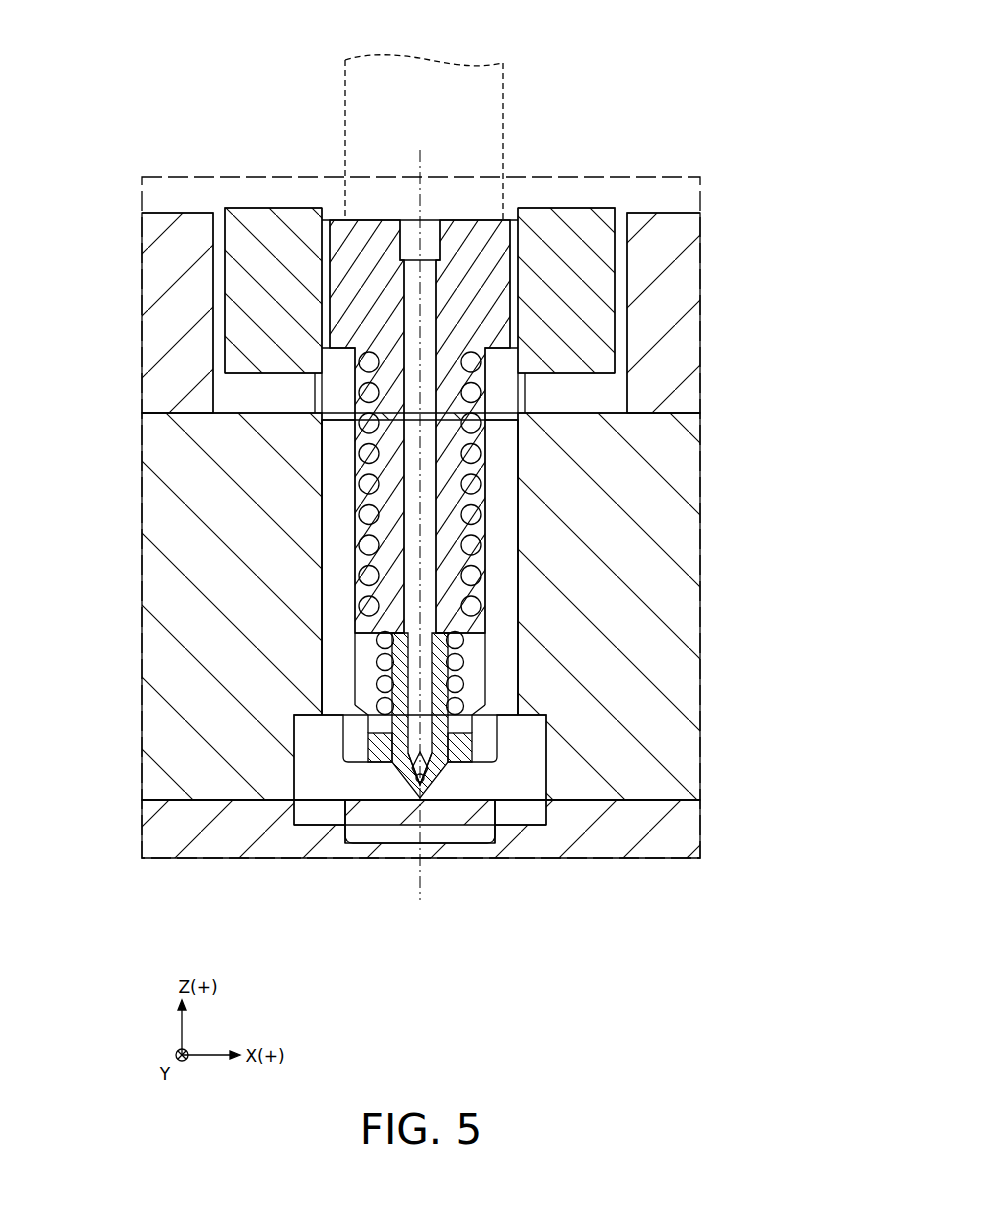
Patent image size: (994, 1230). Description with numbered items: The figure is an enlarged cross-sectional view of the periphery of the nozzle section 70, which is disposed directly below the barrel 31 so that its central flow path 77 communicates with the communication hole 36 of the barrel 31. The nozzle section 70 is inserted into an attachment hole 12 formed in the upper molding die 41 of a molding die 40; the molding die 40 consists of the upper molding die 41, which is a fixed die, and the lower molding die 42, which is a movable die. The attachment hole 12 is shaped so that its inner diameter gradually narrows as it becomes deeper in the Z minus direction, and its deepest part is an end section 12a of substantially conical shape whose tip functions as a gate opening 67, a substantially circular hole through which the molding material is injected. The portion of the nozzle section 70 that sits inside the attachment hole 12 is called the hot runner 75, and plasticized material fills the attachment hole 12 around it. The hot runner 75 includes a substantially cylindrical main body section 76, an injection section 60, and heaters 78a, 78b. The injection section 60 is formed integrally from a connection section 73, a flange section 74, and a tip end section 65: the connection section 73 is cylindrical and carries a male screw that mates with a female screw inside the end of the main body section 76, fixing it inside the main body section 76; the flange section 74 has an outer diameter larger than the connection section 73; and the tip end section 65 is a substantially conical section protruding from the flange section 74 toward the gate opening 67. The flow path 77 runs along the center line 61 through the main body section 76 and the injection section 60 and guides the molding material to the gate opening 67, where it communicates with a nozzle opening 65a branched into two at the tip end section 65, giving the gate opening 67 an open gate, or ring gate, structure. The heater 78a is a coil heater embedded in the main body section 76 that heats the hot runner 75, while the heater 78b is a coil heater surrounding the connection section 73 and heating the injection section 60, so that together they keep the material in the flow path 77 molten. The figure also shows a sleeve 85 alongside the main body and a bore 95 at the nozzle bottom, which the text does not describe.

The barrel 31 is at (578, 73).
The communication hole 36 is at (506, 72).
The center line 61 is at (428, 157).
The nozzle section 70 is at (582, 204).
The hot runner 75 is at (552, 479).
The main body section 76 is at (455, 524).
The flow path 77 is at (415, 482).
The heater 78a is at (363, 548).
The heater 78b is at (382, 640).
The connection section 73 is at (378, 690).
The flange section 74 is at (380, 743).
The attachment hole 12 is at (510, 598).
The sleeve 85 is at (510, 680).
The upper molding die 41 is at (620, 750).
The lower molding die 42 is at (625, 823).
The molding die 40 is at (769, 742).
The injection section 60 is at (507, 779).
The tip end section 65 is at (365, 840).
The nozzle opening 65a is at (345, 828).
The ejection hole 95 is at (400, 840).
The gate opening 67 is at (434, 800).
The end section 12a is at (445, 798).